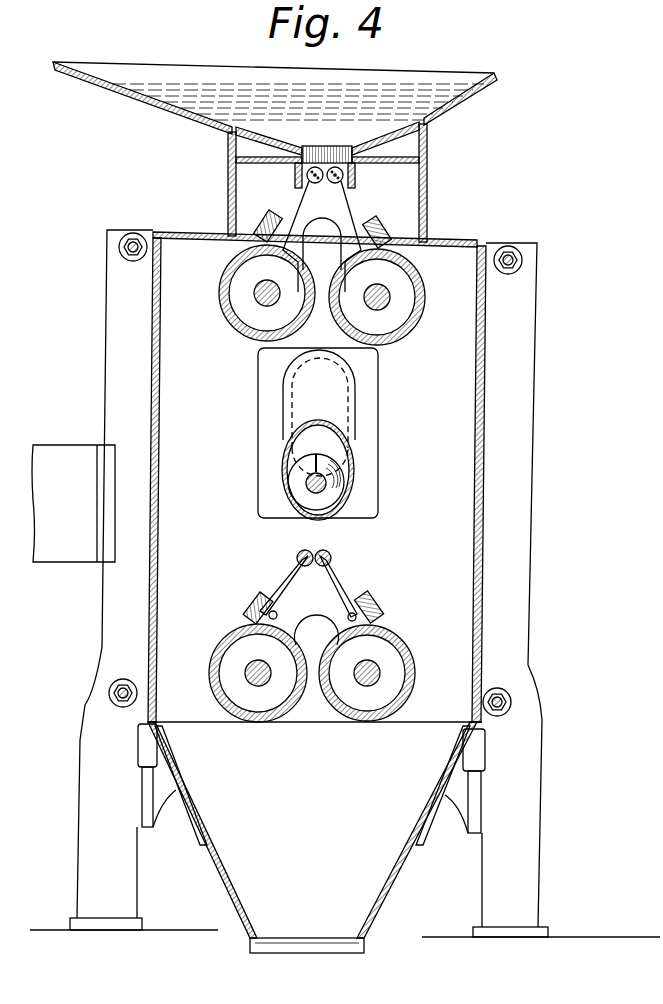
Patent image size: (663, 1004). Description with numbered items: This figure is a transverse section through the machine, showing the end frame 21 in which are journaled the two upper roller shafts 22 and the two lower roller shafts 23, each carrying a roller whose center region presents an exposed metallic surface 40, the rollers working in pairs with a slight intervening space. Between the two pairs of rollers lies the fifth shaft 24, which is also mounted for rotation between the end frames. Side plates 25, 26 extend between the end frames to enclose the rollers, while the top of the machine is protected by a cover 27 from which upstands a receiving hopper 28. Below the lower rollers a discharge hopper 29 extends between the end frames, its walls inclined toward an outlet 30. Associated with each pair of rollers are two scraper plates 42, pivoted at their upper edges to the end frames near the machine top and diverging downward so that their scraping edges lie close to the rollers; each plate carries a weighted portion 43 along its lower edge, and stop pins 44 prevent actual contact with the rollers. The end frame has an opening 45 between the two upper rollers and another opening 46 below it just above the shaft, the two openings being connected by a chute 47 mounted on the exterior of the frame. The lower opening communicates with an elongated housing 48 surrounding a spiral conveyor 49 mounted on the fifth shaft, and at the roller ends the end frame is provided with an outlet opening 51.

The end frame 21 is at (516, 568).
The upper roller shafts 22 is at (256, 287).
The lower roller shafts 23 is at (250, 664).
The fifth shaft 24 is at (306, 485).
The side plate 25 is at (152, 373).
The side plate 26 is at (485, 470).
The cover 27 is at (410, 179).
The receiving hopper 28 is at (157, 62).
The discharge hopper 29 is at (232, 889).
The outlet 30 is at (310, 938).
The exposed metallic surface 40 is at (221, 308).
The scraper plates 42 is at (290, 196).
The weighted portion 43 is at (262, 223).
The stop pins 44 is at (350, 613).
The opening 45 is at (323, 218).
The opening 46 is at (355, 398).
The chute 47 is at (278, 350).
The elongated housing 48 is at (284, 465).
The spiral conveyor 49 is at (336, 480).
The outlet opening 51 is at (316, 630).